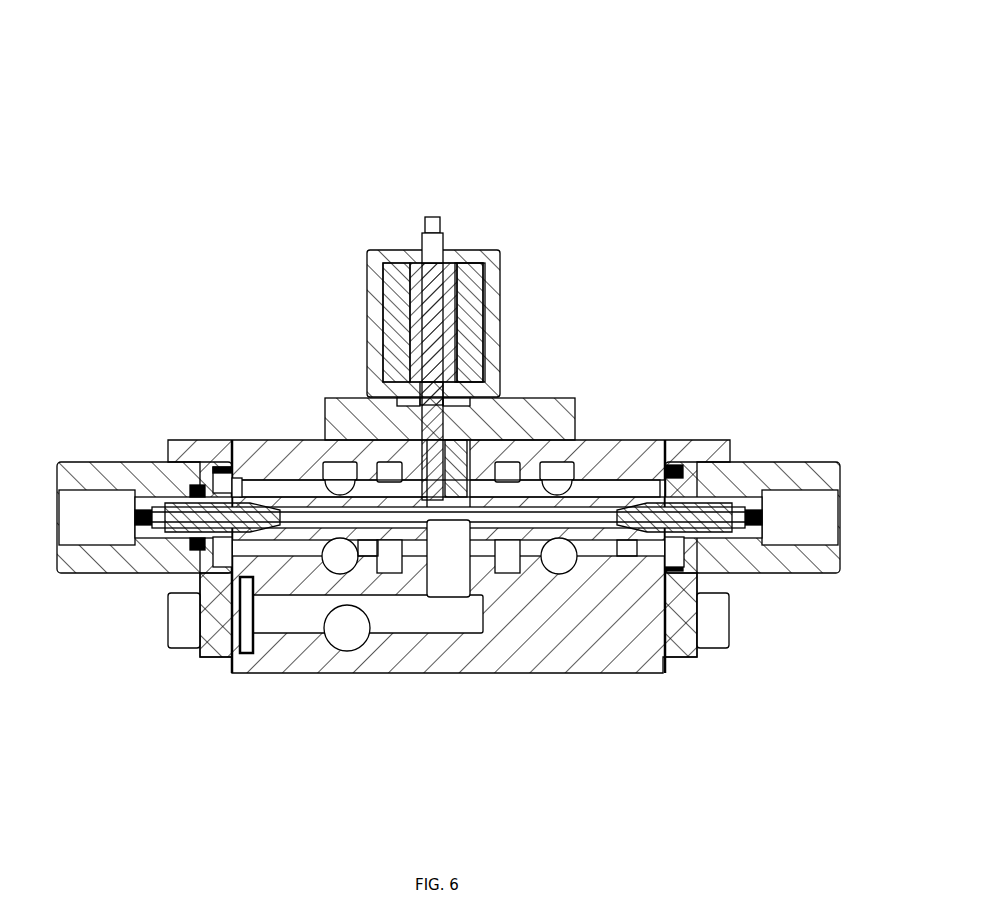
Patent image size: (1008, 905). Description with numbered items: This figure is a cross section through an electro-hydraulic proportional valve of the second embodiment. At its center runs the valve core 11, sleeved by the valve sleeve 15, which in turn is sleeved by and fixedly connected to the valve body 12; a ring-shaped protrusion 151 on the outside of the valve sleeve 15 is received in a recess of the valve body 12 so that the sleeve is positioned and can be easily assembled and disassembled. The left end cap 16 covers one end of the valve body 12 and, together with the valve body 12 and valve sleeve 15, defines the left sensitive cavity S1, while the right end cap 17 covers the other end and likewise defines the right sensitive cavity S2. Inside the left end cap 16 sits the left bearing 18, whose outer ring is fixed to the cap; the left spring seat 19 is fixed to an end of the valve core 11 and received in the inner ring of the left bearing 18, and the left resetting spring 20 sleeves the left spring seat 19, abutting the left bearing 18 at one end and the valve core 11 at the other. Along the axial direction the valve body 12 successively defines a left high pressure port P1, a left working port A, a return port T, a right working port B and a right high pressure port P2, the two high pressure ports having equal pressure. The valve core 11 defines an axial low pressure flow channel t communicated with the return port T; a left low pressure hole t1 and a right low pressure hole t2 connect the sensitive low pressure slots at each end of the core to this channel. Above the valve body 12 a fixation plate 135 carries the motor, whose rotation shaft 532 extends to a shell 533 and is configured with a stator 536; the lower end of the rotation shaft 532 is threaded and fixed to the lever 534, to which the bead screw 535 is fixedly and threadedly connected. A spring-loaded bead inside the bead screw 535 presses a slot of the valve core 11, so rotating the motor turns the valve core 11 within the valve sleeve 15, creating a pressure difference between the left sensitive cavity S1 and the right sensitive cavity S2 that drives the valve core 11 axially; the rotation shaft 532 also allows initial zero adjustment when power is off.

The valve core 11 is at (308, 500).
The valve body 12 is at (333, 452).
The valve sleeve 15 is at (272, 482).
The left end cap 16 is at (123, 477).
The right end cap 17 is at (760, 480).
The left bearing 18 is at (198, 490).
The left spring seat 19 is at (217, 482).
The left resetting spring 20 is at (233, 487).
The fixation plate 135 is at (382, 423).
The ring-shaped protrusion 151 is at (676, 468).
The rotation shaft 532 is at (422, 298).
The shell 533 is at (480, 258).
The lever 534 is at (478, 337).
The bead screw 535 is at (465, 443).
The stator 536 is at (465, 290).
The left high pressure port P1 is at (340, 560).
The right high pressure port P2 is at (560, 562).
The left working port A is at (390, 563).
The right working port B is at (508, 562).
The return port T is at (448, 568).
The low pressure flow channel t is at (375, 553).
The left low pressure hole t1 is at (283, 600).
The right low pressure hole t2 is at (633, 558).
The left sensitive cavity S1 is at (222, 548).
The right sensitive cavity S2 is at (655, 548).